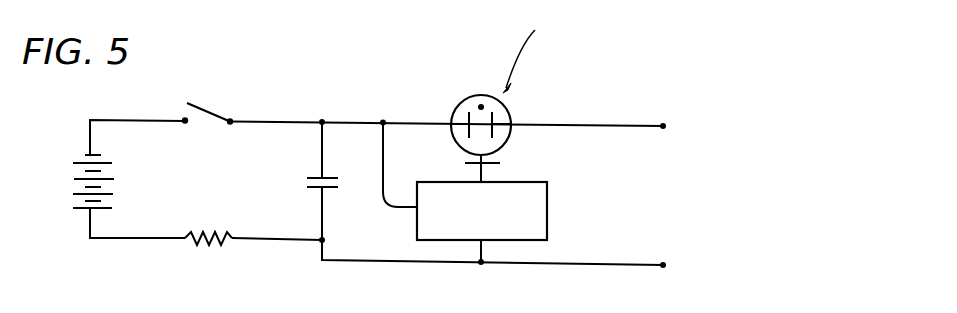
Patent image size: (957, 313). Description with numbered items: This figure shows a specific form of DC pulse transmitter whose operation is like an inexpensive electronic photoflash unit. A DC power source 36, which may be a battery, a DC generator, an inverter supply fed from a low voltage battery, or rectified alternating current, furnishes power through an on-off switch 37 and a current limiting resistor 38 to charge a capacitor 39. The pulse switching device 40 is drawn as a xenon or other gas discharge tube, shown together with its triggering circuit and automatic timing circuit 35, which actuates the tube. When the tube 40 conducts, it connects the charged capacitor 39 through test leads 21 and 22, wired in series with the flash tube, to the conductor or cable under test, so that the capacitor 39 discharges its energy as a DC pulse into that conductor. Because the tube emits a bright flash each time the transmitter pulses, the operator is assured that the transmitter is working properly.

The test lead 21 is at (604, 126).
The test lead 22 is at (604, 265).
The triggering circuit and automatic timing circuit 35 is at (547, 202).
The DC power source 36 is at (102, 210).
The on-off switch 37 is at (210, 112).
The current limiting resistor 38 is at (228, 242).
The capacitor 39 is at (327, 190).
The pulse switching device 40 is at (481, 93).